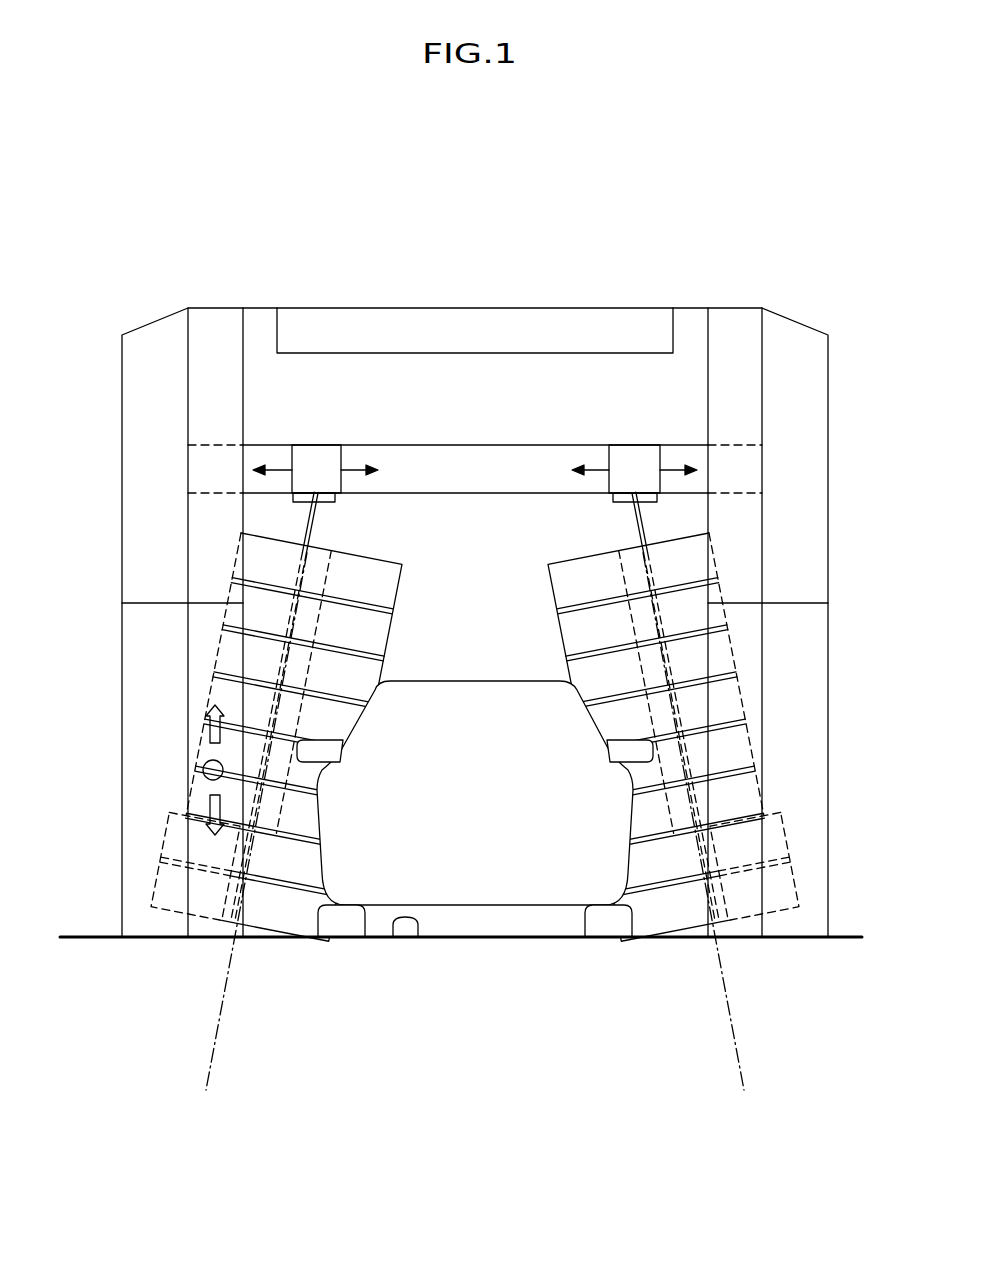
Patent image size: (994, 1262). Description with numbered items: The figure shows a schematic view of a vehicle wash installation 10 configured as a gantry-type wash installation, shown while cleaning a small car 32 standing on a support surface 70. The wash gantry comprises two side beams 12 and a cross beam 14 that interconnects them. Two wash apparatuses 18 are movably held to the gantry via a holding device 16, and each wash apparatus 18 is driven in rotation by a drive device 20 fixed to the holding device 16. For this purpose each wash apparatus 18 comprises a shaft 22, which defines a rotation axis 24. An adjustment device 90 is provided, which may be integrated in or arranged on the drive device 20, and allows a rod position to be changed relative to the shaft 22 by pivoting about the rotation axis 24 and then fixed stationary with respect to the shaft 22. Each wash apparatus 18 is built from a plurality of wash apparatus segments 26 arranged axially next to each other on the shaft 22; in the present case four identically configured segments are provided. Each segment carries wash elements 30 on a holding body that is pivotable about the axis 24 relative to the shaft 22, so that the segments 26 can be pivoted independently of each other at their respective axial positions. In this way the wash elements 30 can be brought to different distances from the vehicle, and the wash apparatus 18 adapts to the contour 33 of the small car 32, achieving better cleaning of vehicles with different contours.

The vehicle wash installation 10 is at (476, 524).
The side beams 12 is at (150, 405).
The cross beam 14 is at (452, 375).
The holding device 16 is at (522, 462).
The wash apparatus 18 is at (266, 520).
The drive device 20 is at (322, 462).
The shaft 22 is at (318, 527).
The rotation axis 24 is at (213, 1046).
The wash apparatus segments 26 is at (212, 574).
The wash elements 30 is at (588, 670).
The small car 32 is at (533, 878).
The contour 33 is at (602, 738).
The support surface 70 is at (418, 937).
The adjustment device 90 is at (335, 502).